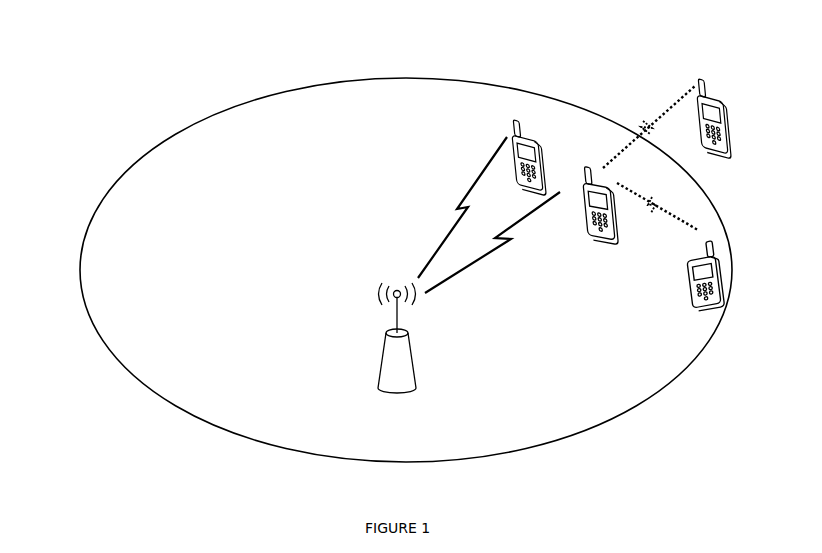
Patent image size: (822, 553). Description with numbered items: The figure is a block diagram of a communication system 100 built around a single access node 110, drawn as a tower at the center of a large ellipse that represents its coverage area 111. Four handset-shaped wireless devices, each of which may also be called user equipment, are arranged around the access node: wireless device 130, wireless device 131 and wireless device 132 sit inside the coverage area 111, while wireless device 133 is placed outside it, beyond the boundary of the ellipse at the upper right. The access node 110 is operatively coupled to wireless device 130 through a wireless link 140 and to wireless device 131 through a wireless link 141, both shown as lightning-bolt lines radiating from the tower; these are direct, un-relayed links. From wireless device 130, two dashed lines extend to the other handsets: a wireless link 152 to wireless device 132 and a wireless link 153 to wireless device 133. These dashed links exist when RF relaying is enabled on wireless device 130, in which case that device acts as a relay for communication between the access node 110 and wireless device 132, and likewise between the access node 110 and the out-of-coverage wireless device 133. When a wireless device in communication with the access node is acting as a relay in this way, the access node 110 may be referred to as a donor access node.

The communication system 100 is at (57, 24).
The access node 110 is at (387, 389).
The coverage area 111 is at (409, 113).
The wireless device 130 is at (597, 236).
The wireless device 131 is at (548, 150).
The wireless device 132 is at (695, 308).
The wireless device 133 is at (730, 103).
The wireless link 140 is at (504, 242).
The wireless link 141 is at (459, 203).
The wireless link 152 is at (677, 225).
The wireless link 153 is at (672, 103).